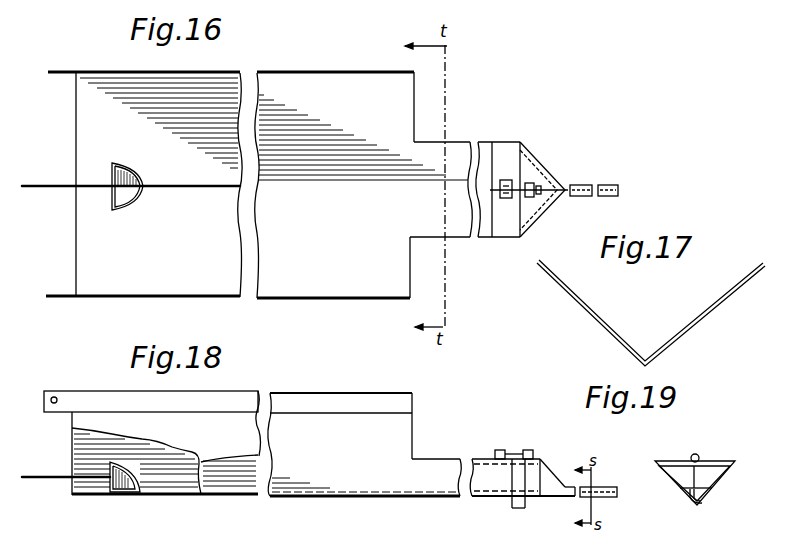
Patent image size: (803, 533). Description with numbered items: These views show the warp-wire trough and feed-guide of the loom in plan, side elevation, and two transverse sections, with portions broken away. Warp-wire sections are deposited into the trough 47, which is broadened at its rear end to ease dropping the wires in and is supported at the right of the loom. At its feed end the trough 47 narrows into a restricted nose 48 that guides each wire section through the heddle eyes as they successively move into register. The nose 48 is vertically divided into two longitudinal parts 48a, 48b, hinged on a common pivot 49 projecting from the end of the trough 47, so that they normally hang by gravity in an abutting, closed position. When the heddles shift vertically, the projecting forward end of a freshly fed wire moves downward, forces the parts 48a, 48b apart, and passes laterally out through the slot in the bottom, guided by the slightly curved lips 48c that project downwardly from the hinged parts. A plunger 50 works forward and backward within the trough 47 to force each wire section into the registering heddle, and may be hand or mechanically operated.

In FIG. 16, the trough 47 is at (259, 185).
In FIG. 17, the trough 47 is at (680, 340).
In FIG. 18, the trough 47 is at (309, 443).
In FIG. 16, the nose 48 is at (610, 184).
In FIG. 18, the nose 48 is at (600, 487).
In FIG. 19, the nose 48 is at (694, 503).
In FIG. 19, the longitudinal part of nose 48a is at (672, 480).
In FIG. 19, the longitudinal part of nose 48b is at (716, 476).
In FIG. 18, the curved lips 48c is at (515, 505).
In FIG. 19, the curved lips 48c is at (703, 503).
In FIG. 16, the pivot 49 is at (506, 199).
In FIG. 18, the pivot 49 is at (512, 456).
In FIG. 19, the pivot 49 is at (700, 455).
In FIG. 16, the plunger 50 is at (127, 210).
In FIG. 18, the plunger 50 is at (128, 480).